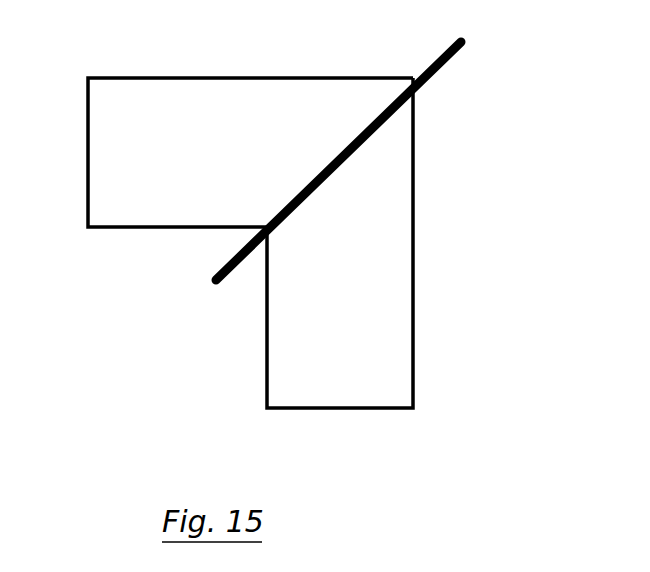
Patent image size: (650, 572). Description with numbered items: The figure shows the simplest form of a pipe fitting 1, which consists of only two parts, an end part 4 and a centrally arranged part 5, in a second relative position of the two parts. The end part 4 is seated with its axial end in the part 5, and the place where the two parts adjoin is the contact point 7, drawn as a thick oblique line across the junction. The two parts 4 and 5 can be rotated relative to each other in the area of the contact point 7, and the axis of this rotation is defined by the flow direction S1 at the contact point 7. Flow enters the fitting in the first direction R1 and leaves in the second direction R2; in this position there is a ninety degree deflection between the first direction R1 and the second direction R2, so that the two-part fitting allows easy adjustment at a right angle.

The pipe fitting 1 is at (297, 240).
The end part 4 is at (194, 78).
The centrally arranged part 5 is at (414, 238).
The contact point 7 is at (368, 122).
The flow direction S1 is at (307, 150).
The first direction R1 is at (78, 155).
The second direction R2 is at (343, 415).